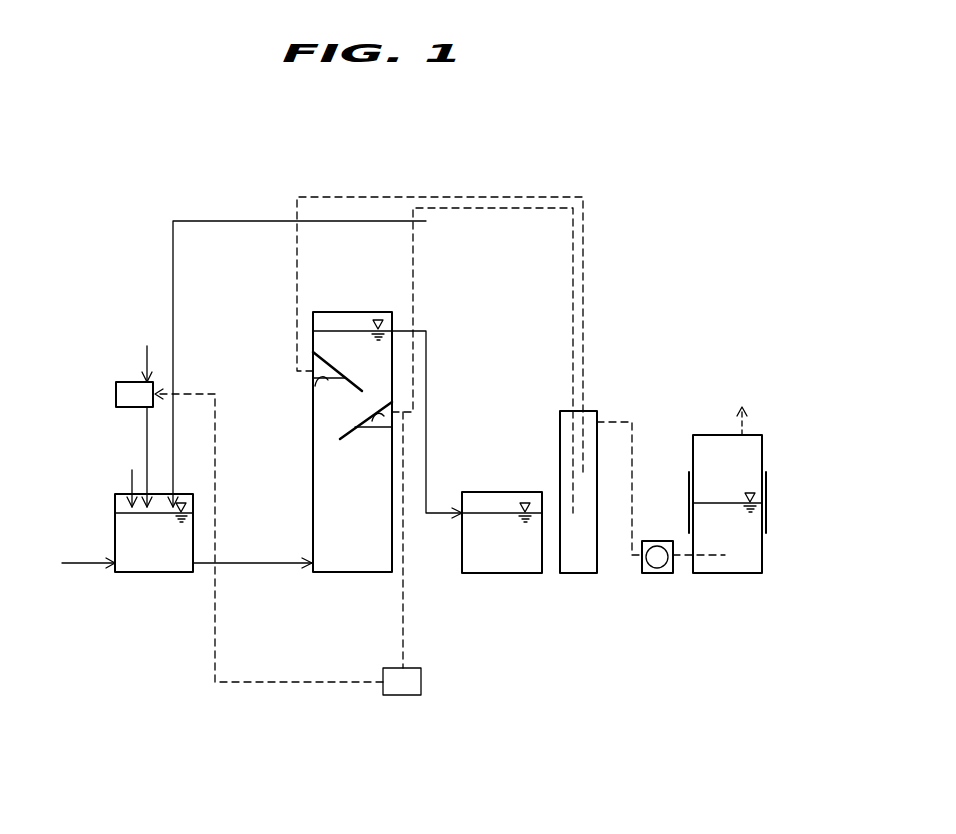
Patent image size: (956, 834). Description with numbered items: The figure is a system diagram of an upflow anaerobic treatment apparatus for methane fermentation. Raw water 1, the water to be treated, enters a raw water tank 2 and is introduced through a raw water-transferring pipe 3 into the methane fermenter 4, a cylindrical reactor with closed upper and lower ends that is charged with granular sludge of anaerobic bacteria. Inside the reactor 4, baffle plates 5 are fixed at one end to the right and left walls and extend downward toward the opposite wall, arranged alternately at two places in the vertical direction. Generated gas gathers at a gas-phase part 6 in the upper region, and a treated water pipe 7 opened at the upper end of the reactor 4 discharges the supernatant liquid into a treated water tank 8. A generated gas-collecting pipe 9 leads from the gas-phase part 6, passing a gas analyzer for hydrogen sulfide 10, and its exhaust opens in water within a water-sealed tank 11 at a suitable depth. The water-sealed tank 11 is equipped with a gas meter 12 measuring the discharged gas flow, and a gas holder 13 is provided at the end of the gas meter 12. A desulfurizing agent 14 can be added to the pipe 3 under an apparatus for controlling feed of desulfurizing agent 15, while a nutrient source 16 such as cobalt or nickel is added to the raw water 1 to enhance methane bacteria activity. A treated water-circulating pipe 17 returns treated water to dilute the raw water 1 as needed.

The raw water 1 is at (78, 563).
The raw water tank 2 is at (137, 573).
The raw water-transferring pipe 3 is at (248, 565).
The methane fermenter 4 is at (340, 574).
The baffle plate 5 is at (353, 391).
The gas-phase part 6 is at (316, 384).
The treated water pipe 7 is at (428, 368).
The treated water tank 8 is at (483, 575).
The generated gas-collecting pipe 9 is at (348, 196).
The gas analyzer for hydrogen sulfide 10 is at (400, 697).
The water-sealed tank 11 is at (572, 575).
The gas meter 12 is at (655, 575).
The gas holder 13 is at (740, 575).
The desulfurizing agent 14 is at (147, 349).
The apparatus for controlling feed of desulfurizing agent 15 is at (116, 394).
The nutrient source 16 is at (128, 474).
The treated water-circulating pipe 17 is at (192, 220).